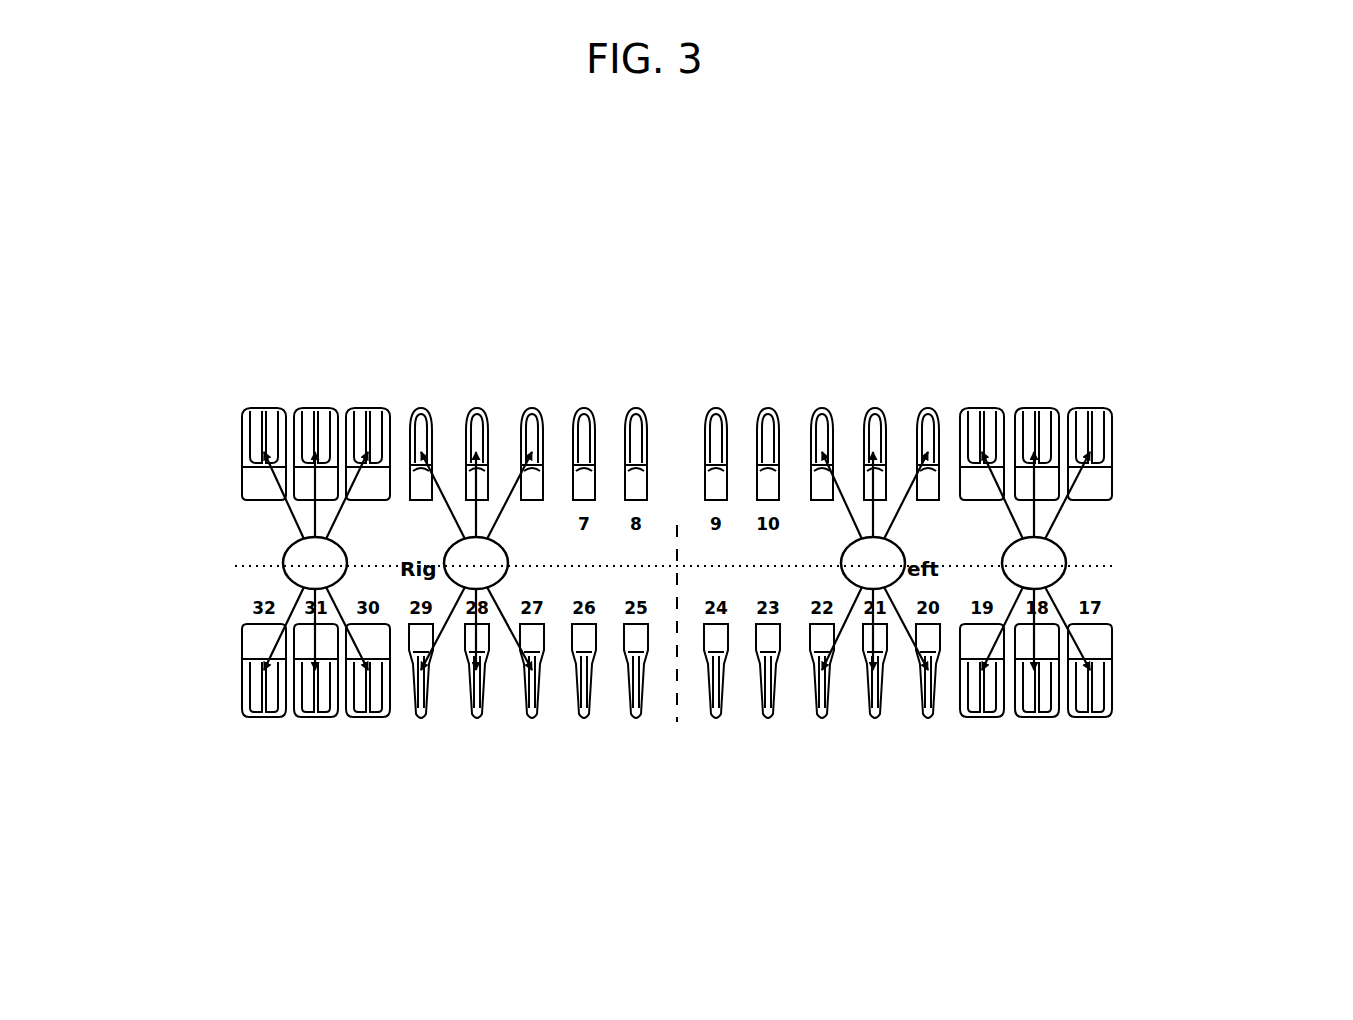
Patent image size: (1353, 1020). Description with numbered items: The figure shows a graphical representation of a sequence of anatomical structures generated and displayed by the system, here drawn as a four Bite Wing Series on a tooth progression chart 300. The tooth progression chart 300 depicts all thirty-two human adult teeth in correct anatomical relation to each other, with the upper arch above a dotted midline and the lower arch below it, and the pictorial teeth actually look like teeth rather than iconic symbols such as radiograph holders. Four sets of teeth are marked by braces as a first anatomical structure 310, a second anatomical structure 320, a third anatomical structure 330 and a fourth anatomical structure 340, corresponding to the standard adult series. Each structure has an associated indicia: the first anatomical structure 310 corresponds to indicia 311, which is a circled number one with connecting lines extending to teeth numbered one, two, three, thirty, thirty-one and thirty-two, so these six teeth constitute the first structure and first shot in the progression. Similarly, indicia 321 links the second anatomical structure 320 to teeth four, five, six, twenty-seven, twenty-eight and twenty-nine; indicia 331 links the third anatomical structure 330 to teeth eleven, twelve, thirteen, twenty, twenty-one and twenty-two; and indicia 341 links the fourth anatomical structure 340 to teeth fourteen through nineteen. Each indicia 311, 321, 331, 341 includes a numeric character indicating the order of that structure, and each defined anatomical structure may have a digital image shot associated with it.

The tooth progression chart 300 is at (1182, 249).
The first anatomical structure 310 is at (382, 397).
The second anatomical structure 320 is at (540, 397).
The third anatomical structure 330 is at (935, 397).
The fourth anatomical structure 340 is at (1103, 397).
The indicia 311 is at (283, 556).
The indicia 321 is at (486, 585).
The indicia 331 is at (885, 588).
The indicia 341 is at (1066, 558).